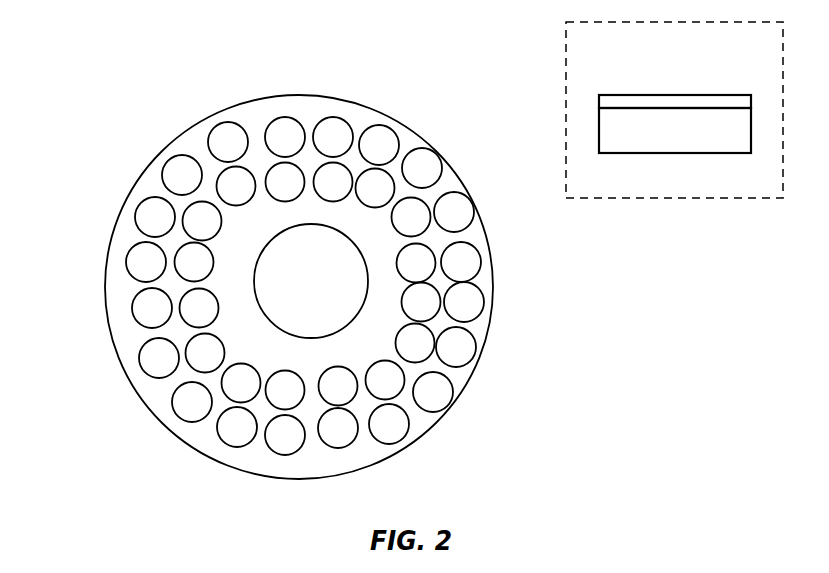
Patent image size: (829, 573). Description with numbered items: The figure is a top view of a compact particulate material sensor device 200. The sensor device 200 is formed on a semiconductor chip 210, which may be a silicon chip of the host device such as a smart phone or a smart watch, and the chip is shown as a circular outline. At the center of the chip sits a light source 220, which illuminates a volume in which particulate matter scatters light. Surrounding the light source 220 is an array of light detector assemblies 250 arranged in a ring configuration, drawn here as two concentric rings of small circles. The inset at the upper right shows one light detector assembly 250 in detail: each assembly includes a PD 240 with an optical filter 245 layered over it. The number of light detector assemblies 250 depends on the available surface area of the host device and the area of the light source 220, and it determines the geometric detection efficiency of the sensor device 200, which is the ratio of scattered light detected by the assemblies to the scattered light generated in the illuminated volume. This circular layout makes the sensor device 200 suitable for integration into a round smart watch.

The sensor device 200 is at (123, 62).
The semiconductor chip 210 is at (496, 290).
The light source 220 is at (296, 291).
The light detector assemblies 250 is at (284, 117).
The PD 240 is at (659, 139).
The optical filter 245 is at (673, 94).